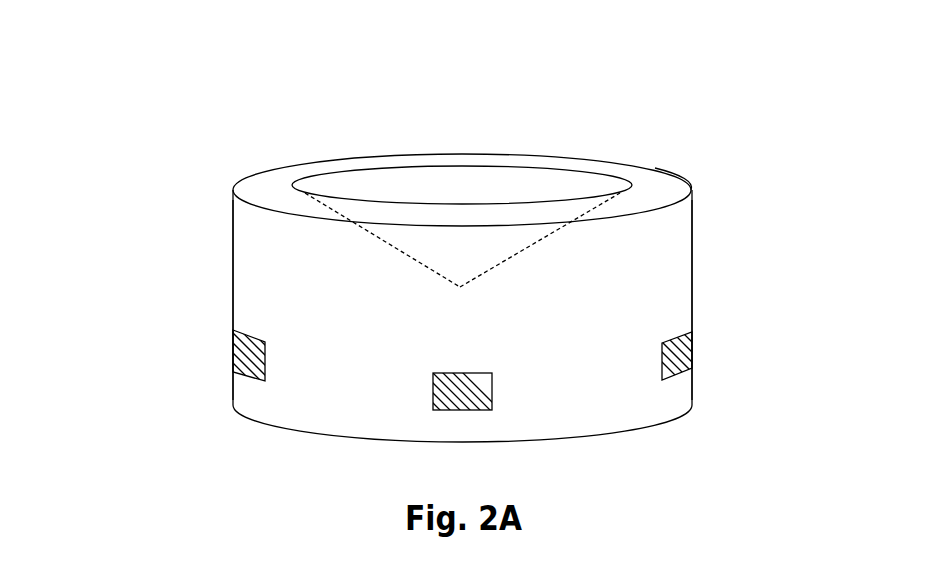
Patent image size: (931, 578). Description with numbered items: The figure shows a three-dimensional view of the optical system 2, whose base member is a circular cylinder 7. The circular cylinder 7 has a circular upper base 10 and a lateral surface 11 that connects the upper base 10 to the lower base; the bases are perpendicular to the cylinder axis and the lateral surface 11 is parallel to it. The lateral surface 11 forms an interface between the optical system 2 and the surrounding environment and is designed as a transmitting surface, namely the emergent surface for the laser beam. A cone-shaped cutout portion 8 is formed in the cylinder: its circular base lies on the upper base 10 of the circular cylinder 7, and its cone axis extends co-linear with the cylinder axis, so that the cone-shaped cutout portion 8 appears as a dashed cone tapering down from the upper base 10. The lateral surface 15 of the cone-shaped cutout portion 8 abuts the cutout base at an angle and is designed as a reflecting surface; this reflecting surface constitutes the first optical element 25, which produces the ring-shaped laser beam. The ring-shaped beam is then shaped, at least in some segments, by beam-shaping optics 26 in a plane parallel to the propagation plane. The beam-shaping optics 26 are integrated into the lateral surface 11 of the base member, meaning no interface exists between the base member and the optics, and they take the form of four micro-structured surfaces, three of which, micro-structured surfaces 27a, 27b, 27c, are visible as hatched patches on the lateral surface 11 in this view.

The optical system 2 is at (150, 203).
The circular cylinder 7 is at (664, 190).
The cone-shaped cutout portion 8 is at (458, 182).
The upper base 10 is at (262, 180).
The lateral surface 11 is at (665, 260).
The lateral surface of the cone-shaped cutout portion 15 is at (535, 258).
The first optical element 25 is at (368, 248).
The beam-shaping optics 26 is at (198, 381).
The micro-structured surface 27a is at (682, 352).
The micro-structured surface 27b is at (461, 383).
The micro-structured surface 27c is at (250, 354).